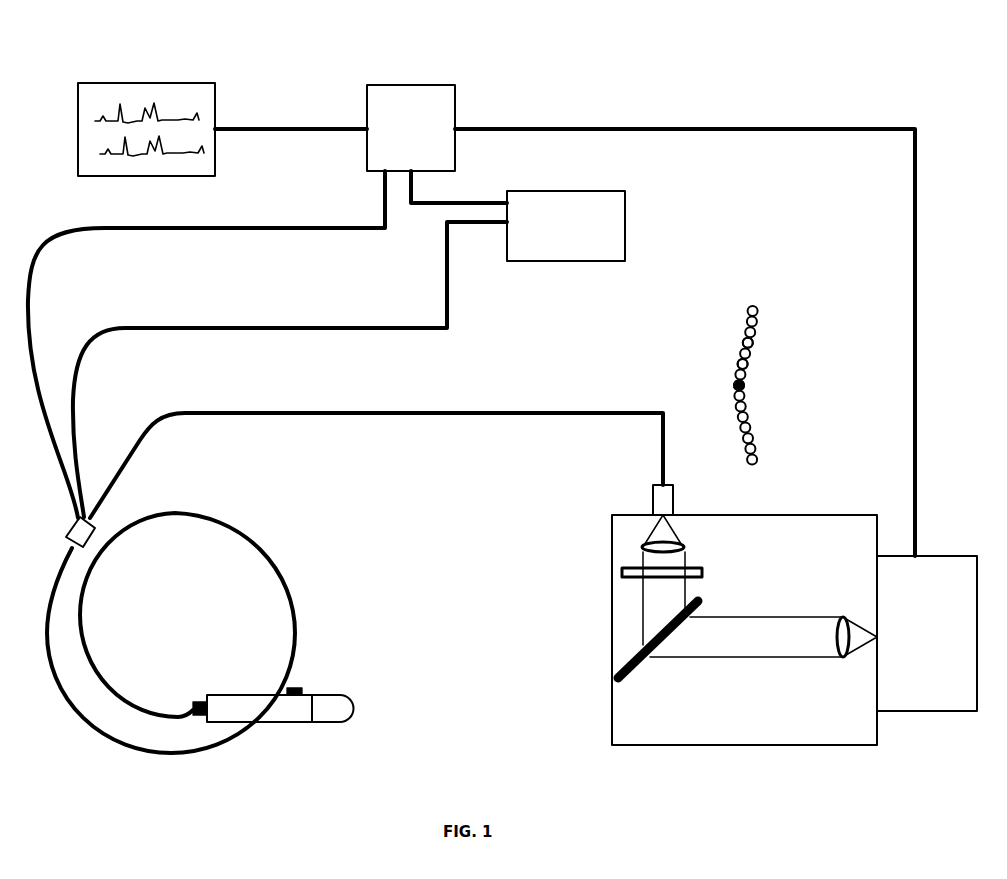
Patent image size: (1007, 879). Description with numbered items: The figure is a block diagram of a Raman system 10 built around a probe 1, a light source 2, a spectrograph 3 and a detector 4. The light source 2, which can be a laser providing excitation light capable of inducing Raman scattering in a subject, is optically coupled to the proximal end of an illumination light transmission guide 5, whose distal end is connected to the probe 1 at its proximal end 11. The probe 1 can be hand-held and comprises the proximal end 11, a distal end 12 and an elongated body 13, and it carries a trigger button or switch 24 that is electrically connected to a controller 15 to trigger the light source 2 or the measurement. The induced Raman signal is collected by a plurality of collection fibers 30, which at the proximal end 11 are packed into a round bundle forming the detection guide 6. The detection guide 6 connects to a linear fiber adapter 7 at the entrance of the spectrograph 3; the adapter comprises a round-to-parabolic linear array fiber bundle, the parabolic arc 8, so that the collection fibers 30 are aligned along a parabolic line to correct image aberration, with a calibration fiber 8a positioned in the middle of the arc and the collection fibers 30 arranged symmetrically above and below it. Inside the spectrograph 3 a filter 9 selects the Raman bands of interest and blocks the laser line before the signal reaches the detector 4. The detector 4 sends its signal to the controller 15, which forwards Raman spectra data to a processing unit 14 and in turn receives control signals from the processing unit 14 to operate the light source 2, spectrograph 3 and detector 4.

The probe 1 is at (278, 725).
The light source 2 is at (518, 216).
The spectrograph 3 is at (607, 540).
The detector 4 is at (927, 633).
The illumination light transmission guide 5 is at (259, 325).
The detection guide 6 is at (356, 420).
The linear fiber adapter 7 is at (776, 320).
The parabolic arc 8 is at (752, 364).
The calibration fiber 8a is at (746, 386).
The filter 9 is at (705, 570).
The Raman system 10 is at (908, 96).
The proximal end 11 is at (210, 692).
The distal end 12 is at (352, 696).
The elongated body 13 is at (258, 692).
The processing unit 14 is at (187, 82).
The controller 15 is at (335, 128).
The trigger button or switch 24 is at (301, 687).
The collection fibers 30 is at (742, 341).